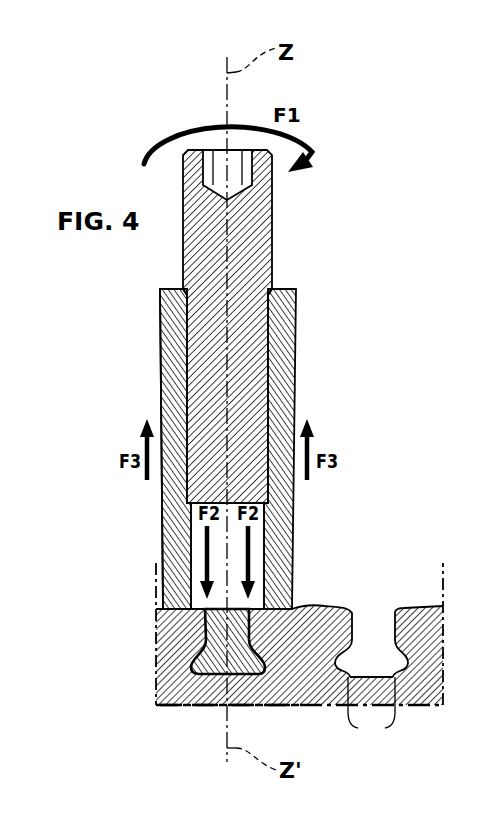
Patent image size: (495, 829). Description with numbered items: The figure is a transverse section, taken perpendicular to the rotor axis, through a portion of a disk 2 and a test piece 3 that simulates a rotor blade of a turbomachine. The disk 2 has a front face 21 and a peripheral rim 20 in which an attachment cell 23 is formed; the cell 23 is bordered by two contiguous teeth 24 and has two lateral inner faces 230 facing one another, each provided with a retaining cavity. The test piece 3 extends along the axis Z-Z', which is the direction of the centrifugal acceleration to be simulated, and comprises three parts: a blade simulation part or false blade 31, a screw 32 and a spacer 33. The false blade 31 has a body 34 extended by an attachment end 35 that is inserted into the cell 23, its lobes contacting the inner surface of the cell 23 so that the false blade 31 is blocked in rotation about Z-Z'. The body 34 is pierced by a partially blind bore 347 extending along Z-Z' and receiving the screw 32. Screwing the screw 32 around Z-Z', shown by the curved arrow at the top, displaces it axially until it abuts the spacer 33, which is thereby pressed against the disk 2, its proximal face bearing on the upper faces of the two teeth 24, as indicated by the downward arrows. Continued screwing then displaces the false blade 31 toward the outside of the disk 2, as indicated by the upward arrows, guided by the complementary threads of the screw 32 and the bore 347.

The disk 2 is at (294, 645).
The test piece 3 is at (131, 328).
The peripheral rim 20 is at (414, 599).
The front face 21 is at (184, 693).
The attachment cell 23 is at (383, 664).
The teeth 24 is at (170, 633).
The blade simulation part 31 is at (186, 462).
The screw 32 is at (258, 223).
The spacer 33 is at (239, 567).
The body 34 is at (162, 382).
The attachment end 35 is at (165, 644).
The lateral inner faces 230 is at (371, 713).
The partially blind bore 347 is at (279, 283).